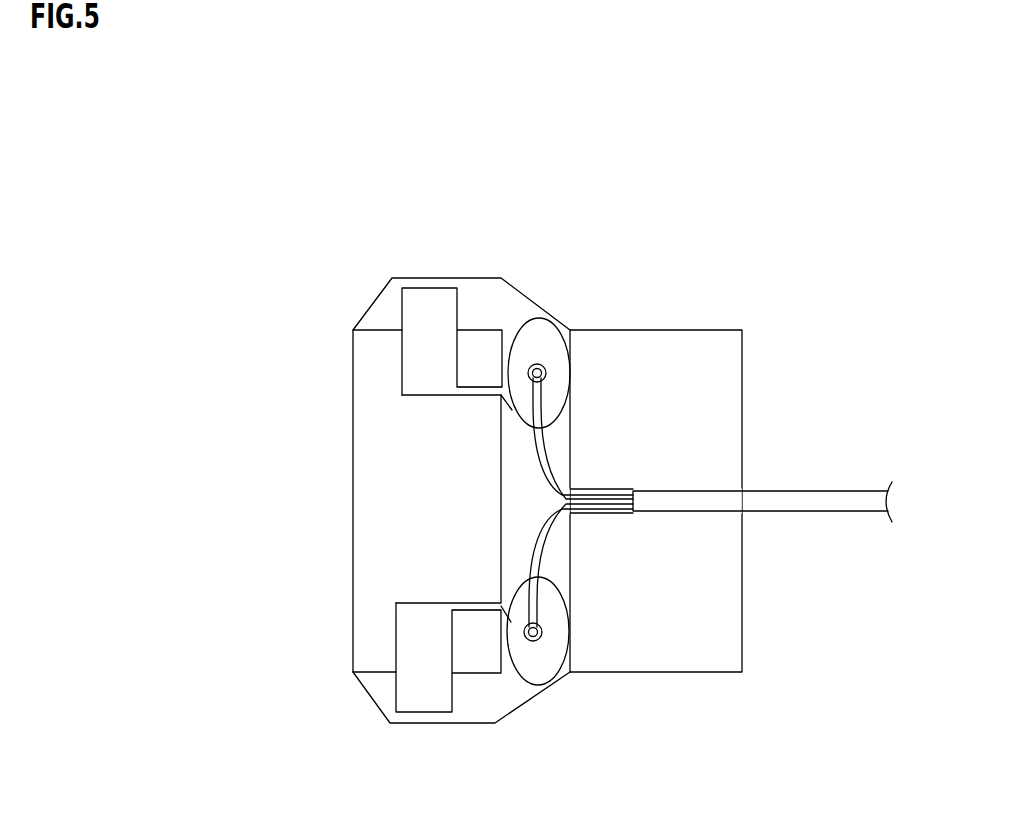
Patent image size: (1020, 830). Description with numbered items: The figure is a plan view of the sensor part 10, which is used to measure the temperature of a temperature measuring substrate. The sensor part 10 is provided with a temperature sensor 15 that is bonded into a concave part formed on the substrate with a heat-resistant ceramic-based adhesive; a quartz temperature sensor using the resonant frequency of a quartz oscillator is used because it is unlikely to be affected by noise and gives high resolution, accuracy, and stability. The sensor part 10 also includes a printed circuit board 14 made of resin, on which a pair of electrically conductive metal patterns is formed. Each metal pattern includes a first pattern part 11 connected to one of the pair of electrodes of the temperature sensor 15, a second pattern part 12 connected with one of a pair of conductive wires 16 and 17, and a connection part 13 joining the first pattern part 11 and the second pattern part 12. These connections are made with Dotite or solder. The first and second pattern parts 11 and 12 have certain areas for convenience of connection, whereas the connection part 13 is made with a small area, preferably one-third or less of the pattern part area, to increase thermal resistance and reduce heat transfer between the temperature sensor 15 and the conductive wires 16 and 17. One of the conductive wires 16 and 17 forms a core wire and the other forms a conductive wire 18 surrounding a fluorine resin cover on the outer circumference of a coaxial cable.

The sensor part 10 is at (652, 206).
The first pattern part 11 is at (428, 305).
The second pattern part 12 is at (544, 345).
The connection part 13 is at (477, 395).
The printed circuit board 14 is at (377, 687).
The temperature sensor 15 is at (367, 502).
The conductive wire 16 is at (547, 458).
The conductive wire 17 is at (543, 547).
The conductive wire 18 is at (817, 497).